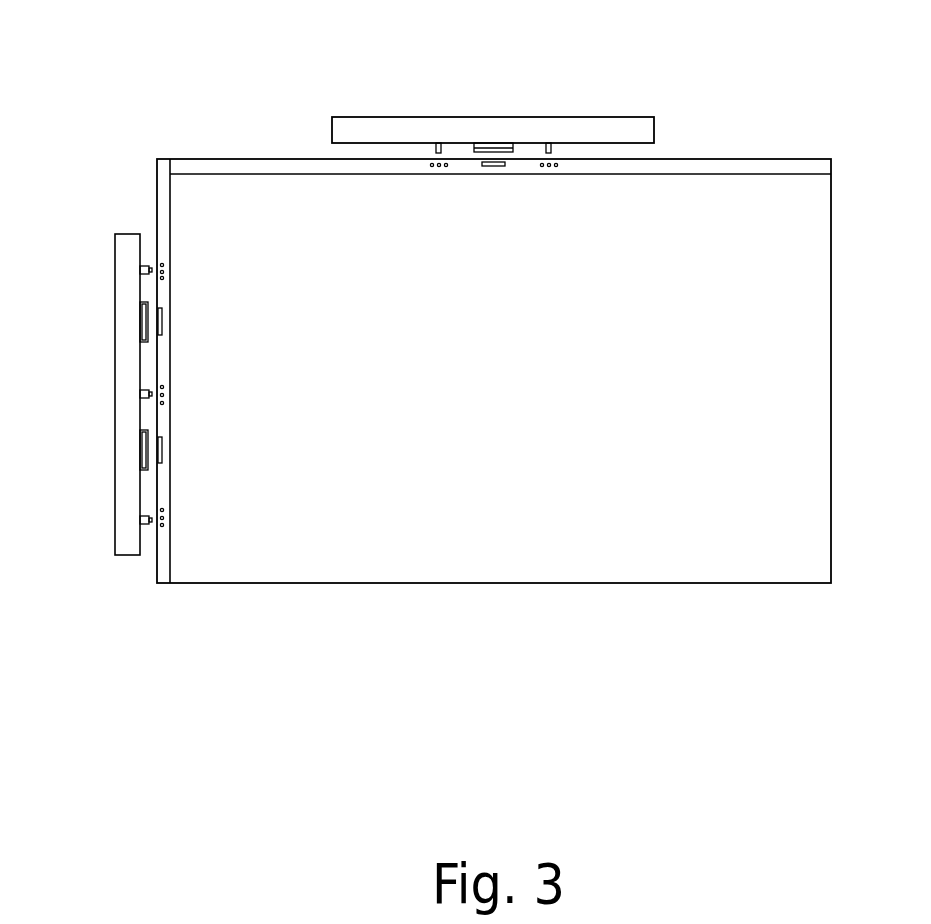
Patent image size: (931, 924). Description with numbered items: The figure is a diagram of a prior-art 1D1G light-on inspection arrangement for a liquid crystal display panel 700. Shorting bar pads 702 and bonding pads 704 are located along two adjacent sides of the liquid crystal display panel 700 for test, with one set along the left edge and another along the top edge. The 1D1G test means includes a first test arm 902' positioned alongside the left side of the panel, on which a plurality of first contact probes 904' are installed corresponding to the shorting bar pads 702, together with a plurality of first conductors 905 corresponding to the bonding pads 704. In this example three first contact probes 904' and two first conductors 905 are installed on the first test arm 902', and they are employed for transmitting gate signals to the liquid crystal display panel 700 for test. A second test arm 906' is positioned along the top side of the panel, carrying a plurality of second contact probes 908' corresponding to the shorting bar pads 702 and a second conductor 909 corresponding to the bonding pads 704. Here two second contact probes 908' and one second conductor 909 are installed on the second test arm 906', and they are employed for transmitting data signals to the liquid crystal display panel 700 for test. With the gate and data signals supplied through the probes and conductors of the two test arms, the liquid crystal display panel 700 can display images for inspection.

The liquid crystal display panel 700 is at (708, 221).
The shorting bar pads 702 is at (157, 265).
The bonding pads 704 is at (158, 460).
The first test arm 902' is at (80, 394).
The first contact probes 904' is at (95, 219).
The first conductors 905 is at (142, 451).
The second test arm 906' is at (493, 71).
The second contact probes 908' is at (395, 94).
The second conductor 909 is at (495, 145).